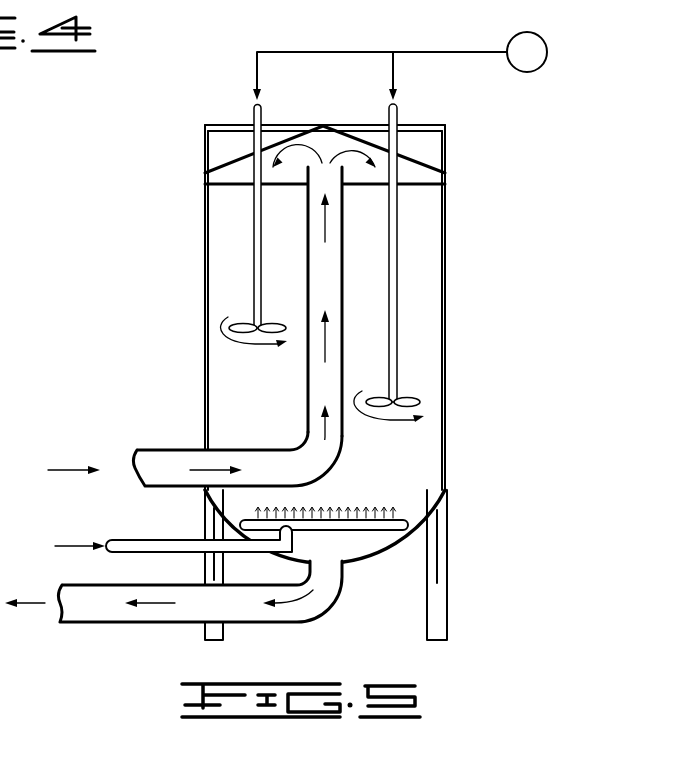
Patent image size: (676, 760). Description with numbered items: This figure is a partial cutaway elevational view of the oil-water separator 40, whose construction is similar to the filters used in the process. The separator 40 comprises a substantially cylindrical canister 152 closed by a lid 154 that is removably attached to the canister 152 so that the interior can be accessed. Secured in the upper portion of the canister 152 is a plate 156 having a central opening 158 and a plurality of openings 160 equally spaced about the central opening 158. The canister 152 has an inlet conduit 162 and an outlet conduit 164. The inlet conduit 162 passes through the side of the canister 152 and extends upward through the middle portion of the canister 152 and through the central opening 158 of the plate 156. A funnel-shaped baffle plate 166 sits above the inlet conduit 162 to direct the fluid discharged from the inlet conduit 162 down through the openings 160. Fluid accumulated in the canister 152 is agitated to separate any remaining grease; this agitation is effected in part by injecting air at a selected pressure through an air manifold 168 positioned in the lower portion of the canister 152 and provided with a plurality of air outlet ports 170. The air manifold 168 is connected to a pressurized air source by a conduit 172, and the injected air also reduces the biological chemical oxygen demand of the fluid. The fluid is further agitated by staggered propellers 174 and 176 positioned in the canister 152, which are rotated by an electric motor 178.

The oil-water separator 40 is at (329, 349).
The canister 152 is at (205, 350).
The lid 154 is at (435, 125).
The plate 156 is at (222, 188).
The central opening 158 is at (343, 190).
The openings 160 is at (404, 194).
The inlet conduit 162 is at (155, 450).
The outlet conduit 164 is at (137, 622).
The funnel-shaped baffle plate 166 is at (238, 158).
The air manifold 168 is at (375, 528).
The air outlet ports 170 is at (395, 518).
The conduit 172 is at (143, 538).
The propeller 174 is at (238, 318).
The propeller 176 is at (410, 400).
The electric motor 178 is at (518, 35).